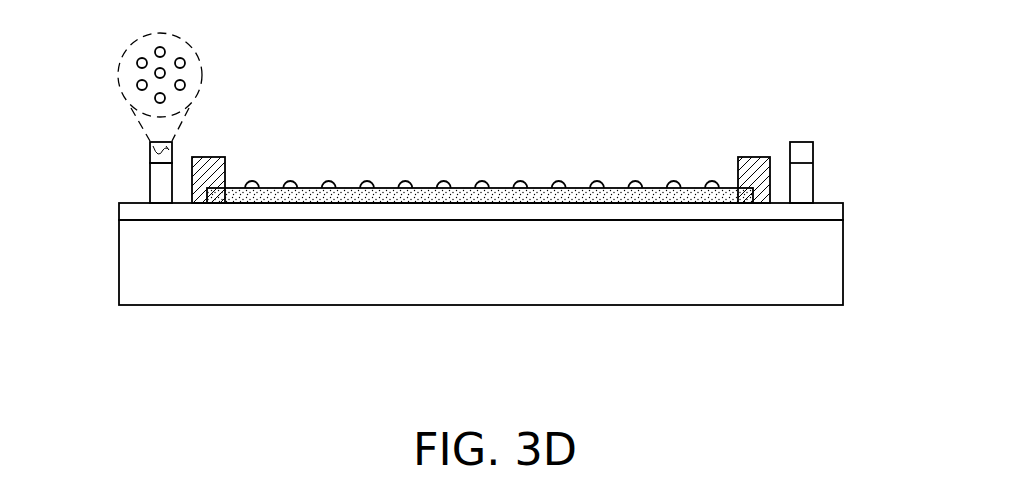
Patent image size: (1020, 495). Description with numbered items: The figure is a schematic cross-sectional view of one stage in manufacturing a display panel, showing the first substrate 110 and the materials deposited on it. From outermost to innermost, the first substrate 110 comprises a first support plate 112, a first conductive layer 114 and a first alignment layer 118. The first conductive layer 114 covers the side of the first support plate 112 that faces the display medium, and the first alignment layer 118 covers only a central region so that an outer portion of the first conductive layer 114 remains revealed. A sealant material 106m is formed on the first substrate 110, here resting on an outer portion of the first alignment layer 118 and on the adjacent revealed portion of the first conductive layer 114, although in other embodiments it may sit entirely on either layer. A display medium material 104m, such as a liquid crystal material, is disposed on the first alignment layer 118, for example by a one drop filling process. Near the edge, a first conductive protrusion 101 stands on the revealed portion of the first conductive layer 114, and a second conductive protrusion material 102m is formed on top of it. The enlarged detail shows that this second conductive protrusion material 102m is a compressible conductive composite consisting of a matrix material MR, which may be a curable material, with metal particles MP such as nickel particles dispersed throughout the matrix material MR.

The first substrate 110 is at (540, 233).
The first support plate 112 is at (825, 282).
The first conductive layer 114 is at (823, 213).
The first alignment layer 118 is at (772, 197).
The first conductive protrusion 101 is at (158, 188).
The second conductive protrusion material 102m is at (148, 153).
The display medium material 104m is at (635, 178).
The sealant material 106m is at (755, 172).
The metal particles MP is at (163, 49).
The matrix material MR is at (200, 70).